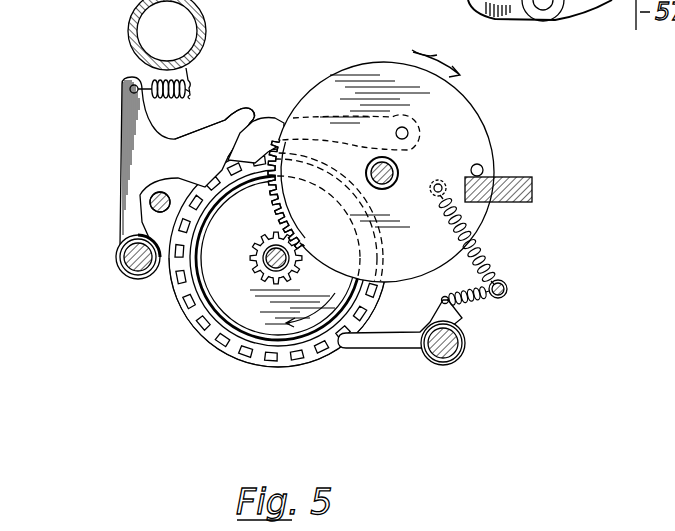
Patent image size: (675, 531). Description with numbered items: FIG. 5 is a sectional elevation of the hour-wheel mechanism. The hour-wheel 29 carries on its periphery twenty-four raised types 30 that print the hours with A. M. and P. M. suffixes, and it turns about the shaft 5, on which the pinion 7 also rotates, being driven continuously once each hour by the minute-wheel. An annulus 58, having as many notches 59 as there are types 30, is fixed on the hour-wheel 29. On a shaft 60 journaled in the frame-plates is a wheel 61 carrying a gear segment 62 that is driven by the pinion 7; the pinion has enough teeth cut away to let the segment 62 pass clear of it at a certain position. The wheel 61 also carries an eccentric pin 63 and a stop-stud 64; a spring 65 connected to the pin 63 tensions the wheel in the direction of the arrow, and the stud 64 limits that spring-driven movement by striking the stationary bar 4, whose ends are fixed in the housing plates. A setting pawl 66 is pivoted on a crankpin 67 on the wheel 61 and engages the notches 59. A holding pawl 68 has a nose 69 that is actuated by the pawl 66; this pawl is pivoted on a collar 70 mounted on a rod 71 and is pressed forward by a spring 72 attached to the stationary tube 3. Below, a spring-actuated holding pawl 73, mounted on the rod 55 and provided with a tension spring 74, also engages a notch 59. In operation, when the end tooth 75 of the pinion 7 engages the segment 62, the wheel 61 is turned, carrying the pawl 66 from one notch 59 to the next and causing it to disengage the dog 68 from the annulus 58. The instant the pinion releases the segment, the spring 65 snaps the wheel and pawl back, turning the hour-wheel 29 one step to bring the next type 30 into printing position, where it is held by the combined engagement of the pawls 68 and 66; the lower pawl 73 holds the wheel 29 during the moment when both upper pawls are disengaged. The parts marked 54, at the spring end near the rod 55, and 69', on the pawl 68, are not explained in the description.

The tubular frame rod 3 is at (129, 24).
The stationary bar 4 is at (535, 188).
The shaft 5 is at (264, 268).
The pinion 7 is at (258, 246).
The hour-wheel 29 is at (236, 359).
The raised types 30 is at (303, 365).
The spring anchor pin 54 is at (525, 288).
The rod 55 is at (459, 358).
The annulus 58 is at (207, 318).
The notches 59 is at (190, 317).
The shaft 60 is at (392, 185).
The wheel 61 is at (453, 102).
The gear segment 62 is at (283, 208).
The eccentric pin 63 is at (438, 180).
The stop-stud 64 is at (485, 165).
The spring 65 is at (492, 249).
The setting pawl 66 is at (277, 118).
The crankpin 67 is at (398, 126).
The holding pawl 68 is at (142, 161).
The nose 69 is at (215, 112).
The spring eye 69' is at (105, 104).
The collar 70 is at (122, 239).
The rod 71 is at (127, 270).
The spring 72 is at (180, 98).
The holding pawl 73 is at (390, 345).
The tension spring 74 is at (470, 302).
The end tooth 75 is at (275, 233).